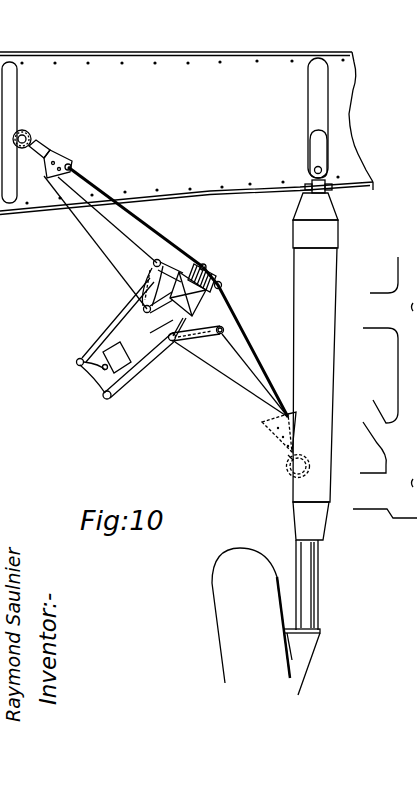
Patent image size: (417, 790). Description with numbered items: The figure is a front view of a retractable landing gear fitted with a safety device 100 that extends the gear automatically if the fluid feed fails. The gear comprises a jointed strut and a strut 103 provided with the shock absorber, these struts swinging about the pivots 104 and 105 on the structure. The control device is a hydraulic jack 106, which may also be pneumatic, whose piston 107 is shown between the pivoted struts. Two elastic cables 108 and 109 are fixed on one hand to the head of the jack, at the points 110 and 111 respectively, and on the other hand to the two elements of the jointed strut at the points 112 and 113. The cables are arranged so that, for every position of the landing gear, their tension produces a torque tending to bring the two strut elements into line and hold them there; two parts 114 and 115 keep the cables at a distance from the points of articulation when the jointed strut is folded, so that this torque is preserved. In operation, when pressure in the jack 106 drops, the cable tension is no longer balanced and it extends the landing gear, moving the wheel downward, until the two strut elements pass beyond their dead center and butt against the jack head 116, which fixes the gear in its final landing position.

The linkage mechanism 100 is at (147, 316).
The strut provided with the shock absorber 103 is at (320, 295).
The pivot 104 is at (31, 130).
The pivot 105 is at (310, 168).
The hydraulic jack 106 is at (126, 350).
The piston 107 is at (108, 368).
The elastic cable 108 is at (180, 223).
The elastic cable 109 is at (252, 345).
The attachment point on the jack head 110 is at (208, 266).
The attachment point on the jack head 111 is at (223, 278).
The attachment point on the jointed strut 112 is at (74, 164).
The attachment point on the jointed strut 113 is at (282, 420).
The spacing part 114 is at (152, 263).
The spacing part 115 is at (217, 336).
The jack head 116 is at (184, 320).